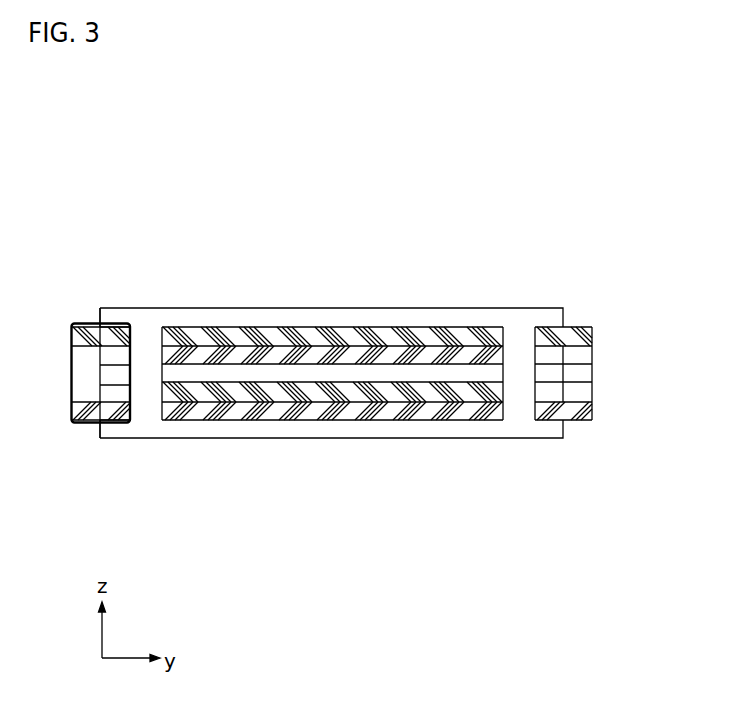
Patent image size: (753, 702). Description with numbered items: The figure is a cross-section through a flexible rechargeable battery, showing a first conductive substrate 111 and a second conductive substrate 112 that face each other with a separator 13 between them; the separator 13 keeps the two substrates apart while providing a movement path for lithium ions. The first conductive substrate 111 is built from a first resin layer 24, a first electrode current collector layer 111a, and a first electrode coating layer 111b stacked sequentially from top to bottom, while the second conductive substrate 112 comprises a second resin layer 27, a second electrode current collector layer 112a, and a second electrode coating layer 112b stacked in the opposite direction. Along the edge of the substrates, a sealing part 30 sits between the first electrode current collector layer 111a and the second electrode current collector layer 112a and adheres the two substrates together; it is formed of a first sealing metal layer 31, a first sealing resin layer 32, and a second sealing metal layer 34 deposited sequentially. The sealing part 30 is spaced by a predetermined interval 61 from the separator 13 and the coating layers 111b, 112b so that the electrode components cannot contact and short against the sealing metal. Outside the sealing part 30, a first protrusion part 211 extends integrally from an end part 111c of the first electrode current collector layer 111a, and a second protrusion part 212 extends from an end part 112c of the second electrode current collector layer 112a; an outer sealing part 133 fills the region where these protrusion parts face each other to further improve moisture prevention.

The separator 13 is at (360, 372).
The first resin layer 24 is at (528, 318).
The second resin layer 27 is at (523, 430).
The sealing part 30 is at (613, 367).
The first sealing metal layer 31 is at (558, 357).
The first sealing resin layer 32 is at (558, 373).
The second sealing metal layer 34 is at (597, 400).
The predetermined interval 61 is at (148, 338).
The first conductive substrate 111 is at (432, 263).
The first electrode current collector layer 111a is at (205, 328).
The first electrode coating layer 111b is at (316, 340).
The end part of the first electrode current collector layer 111c is at (115, 328).
The second conductive substrate 112 is at (432, 472).
The second electrode current collector layer 112a is at (200, 395).
The second electrode coating layer 112b is at (268, 410).
The end part of the second electrode current collector layer 112c is at (115, 425).
The outer sealing part 133 is at (85, 373).
The first protrusion part 211 is at (92, 325).
The second protrusion part 212 is at (88, 423).